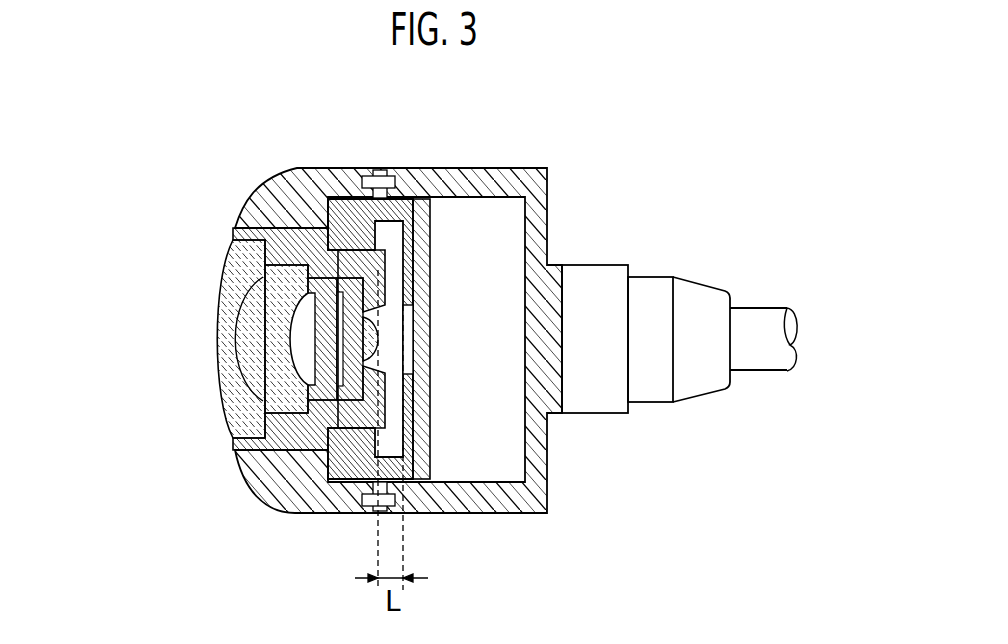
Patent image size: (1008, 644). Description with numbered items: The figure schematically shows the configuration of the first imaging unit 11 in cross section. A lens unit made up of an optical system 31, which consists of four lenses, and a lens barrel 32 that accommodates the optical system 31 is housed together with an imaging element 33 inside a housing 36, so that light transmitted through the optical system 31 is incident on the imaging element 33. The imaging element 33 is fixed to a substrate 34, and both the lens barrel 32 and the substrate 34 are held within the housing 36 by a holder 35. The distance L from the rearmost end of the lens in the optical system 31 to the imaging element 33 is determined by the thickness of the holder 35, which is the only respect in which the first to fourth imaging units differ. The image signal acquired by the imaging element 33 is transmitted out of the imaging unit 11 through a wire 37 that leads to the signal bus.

The first imaging unit 11 is at (630, 150).
The optical system 31 is at (210, 295).
The lens barrel 32 is at (233, 446).
The imaging element 33 is at (410, 318).
The substrate 34 is at (420, 245).
The holder 35 is at (350, 210).
The housing 36 is at (540, 492).
The wire 37 is at (760, 358).